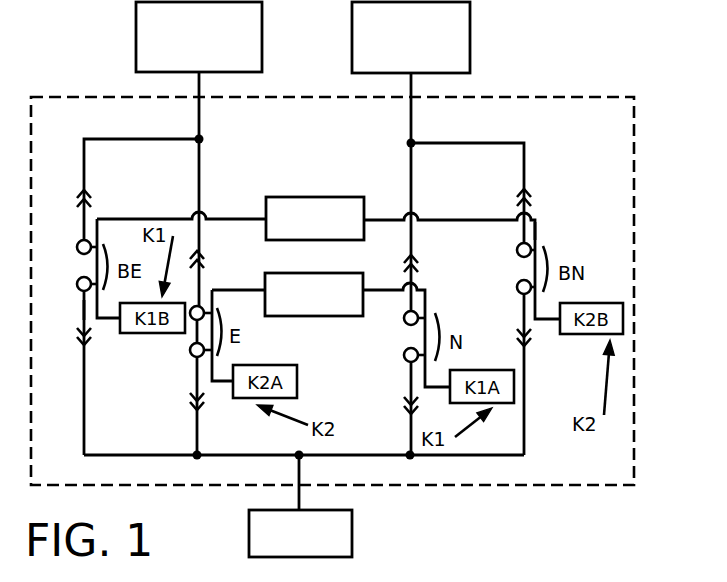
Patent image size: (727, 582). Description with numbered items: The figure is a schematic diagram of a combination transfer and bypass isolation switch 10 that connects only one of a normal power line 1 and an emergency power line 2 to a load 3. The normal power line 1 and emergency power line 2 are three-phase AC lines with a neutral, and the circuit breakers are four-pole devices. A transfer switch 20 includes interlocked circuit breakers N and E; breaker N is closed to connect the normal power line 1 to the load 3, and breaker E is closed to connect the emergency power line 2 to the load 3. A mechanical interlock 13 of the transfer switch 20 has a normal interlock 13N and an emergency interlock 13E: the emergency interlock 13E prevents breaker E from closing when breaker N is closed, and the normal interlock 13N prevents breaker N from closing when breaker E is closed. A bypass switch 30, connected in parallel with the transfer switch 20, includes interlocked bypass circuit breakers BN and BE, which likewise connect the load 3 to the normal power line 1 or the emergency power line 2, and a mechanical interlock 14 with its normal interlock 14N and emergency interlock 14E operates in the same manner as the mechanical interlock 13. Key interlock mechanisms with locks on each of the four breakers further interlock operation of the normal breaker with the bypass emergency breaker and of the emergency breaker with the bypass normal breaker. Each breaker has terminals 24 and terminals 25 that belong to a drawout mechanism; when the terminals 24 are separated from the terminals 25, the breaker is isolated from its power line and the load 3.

The normal power line 1 is at (470, 35).
The emergency power line 2 is at (262, 34).
The load 3 is at (352, 532).
The combination transfer and bypass isolation switch 10 is at (514, 487).
The mechanical interlock 13 is at (305, 273).
The mechanical interlock 14 is at (308, 197).
The emergency interlock 13E is at (232, 289).
The normal interlock 13N is at (431, 297).
The emergency interlock 14E is at (98, 218).
The normal interlock 14N is at (538, 234).
The transfer switch 20 is at (377, 341).
The terminals 24 is at (537, 211).
The terminals 25 is at (531, 193).
The bypass switch 30 is at (110, 366).